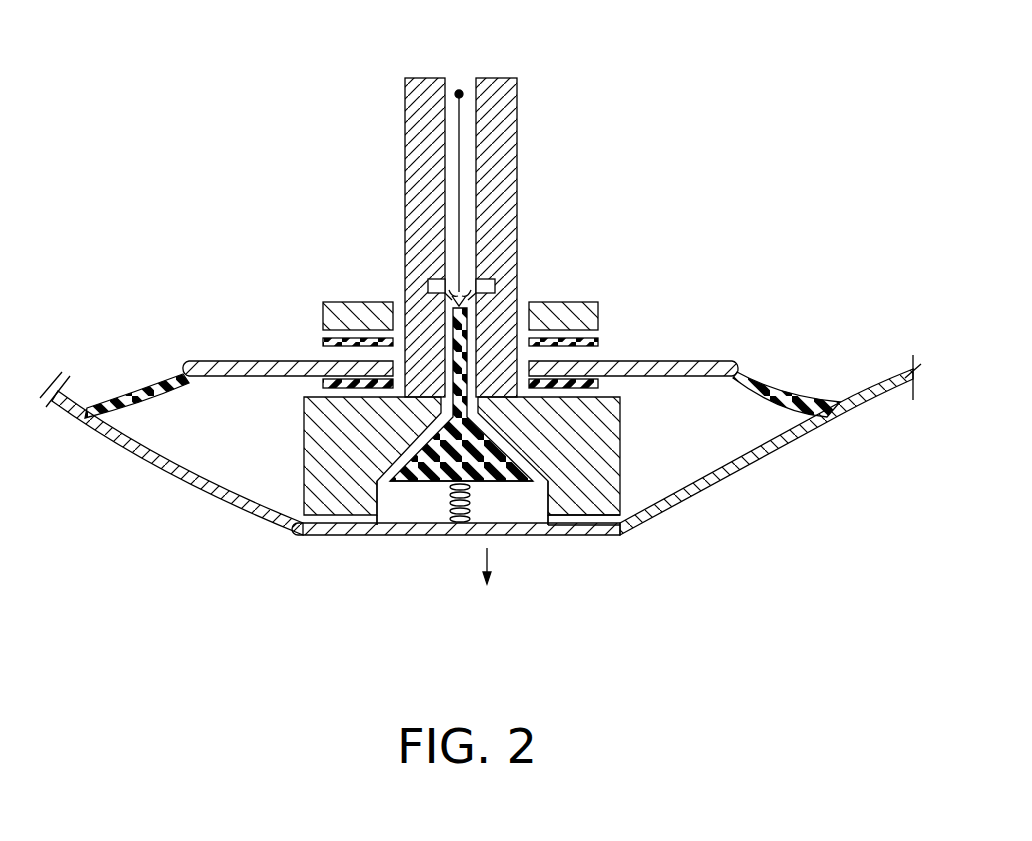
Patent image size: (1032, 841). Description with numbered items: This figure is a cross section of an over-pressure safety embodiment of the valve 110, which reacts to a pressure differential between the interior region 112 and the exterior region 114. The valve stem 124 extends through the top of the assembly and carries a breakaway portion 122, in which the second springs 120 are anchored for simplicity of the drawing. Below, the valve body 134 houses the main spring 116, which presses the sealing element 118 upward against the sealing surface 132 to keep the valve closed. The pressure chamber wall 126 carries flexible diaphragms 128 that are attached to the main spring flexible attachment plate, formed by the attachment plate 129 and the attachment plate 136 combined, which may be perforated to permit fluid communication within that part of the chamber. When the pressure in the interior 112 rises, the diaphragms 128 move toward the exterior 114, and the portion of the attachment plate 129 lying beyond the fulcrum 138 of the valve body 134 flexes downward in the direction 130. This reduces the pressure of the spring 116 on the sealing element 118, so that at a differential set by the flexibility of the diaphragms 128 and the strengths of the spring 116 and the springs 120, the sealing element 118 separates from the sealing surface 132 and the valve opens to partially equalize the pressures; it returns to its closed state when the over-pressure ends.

The valve 110 is at (647, 82).
The interior region 112 is at (887, 535).
The exterior region 114 is at (833, 226).
The spring 116 is at (462, 503).
The sealing element 118 is at (412, 478).
The second spring 120 is at (495, 290).
The breakaway portion 122 is at (428, 290).
The valve stem 124 is at (404, 136).
The pressure chamber wall 126 is at (676, 360).
The flexible diaphragm 128 is at (797, 398).
The attachment plate 129 is at (700, 500).
The direction 130 is at (491, 586).
The sealing surface 132 is at (520, 443).
The valve body 134 is at (345, 433).
The attachment plate 136 is at (438, 535).
The fulcrum 138 is at (620, 515).